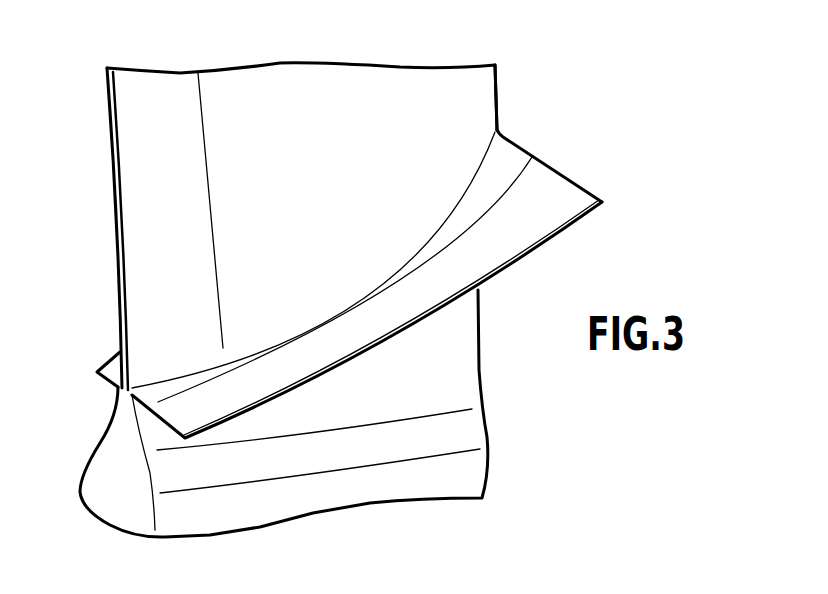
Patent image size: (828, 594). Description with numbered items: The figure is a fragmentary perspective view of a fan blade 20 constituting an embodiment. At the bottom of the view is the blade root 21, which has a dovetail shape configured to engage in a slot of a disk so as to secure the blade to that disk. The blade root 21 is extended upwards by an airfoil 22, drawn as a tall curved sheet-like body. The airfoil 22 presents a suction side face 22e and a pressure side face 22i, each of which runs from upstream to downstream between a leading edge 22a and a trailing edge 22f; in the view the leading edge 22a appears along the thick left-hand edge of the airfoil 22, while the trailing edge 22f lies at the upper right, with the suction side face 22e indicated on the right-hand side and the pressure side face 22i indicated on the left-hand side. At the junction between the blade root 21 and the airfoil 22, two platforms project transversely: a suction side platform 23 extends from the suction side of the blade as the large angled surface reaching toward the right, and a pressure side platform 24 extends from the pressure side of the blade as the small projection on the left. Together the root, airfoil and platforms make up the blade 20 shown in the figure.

The blade 20 is at (607, 68).
The blade root 21 is at (103, 476).
The airfoil 22 is at (130, 208).
The leading edge 22a is at (120, 278).
The suction side face 22e is at (453, 107).
The trailing edge 22f is at (497, 80).
The pressure side face 22i is at (111, 146).
The suction side platform 23 is at (570, 192).
The pressure side platform 24 is at (110, 362).